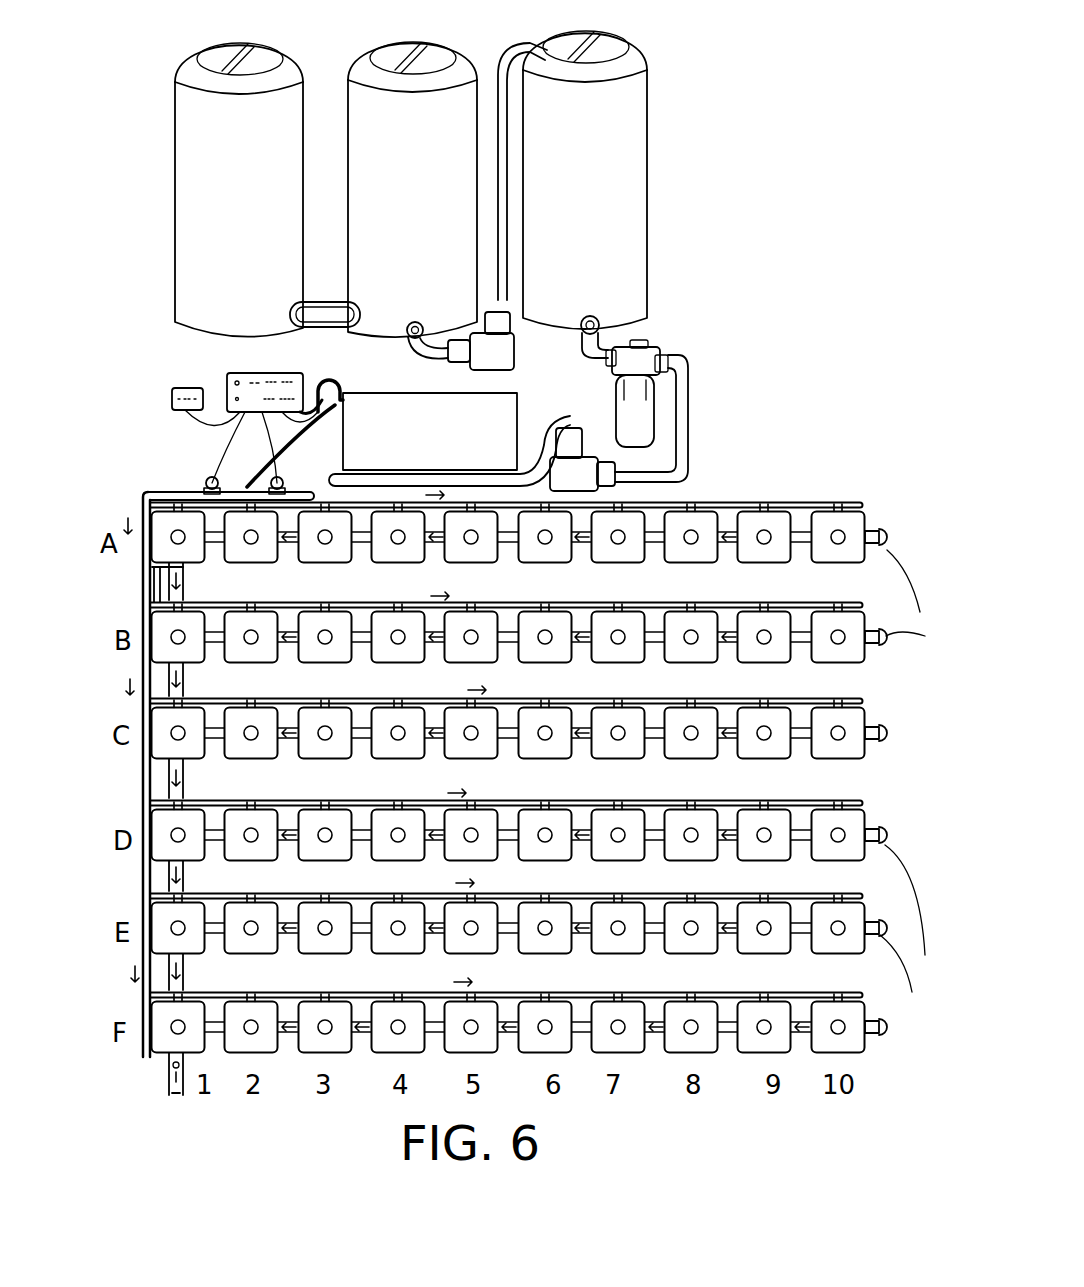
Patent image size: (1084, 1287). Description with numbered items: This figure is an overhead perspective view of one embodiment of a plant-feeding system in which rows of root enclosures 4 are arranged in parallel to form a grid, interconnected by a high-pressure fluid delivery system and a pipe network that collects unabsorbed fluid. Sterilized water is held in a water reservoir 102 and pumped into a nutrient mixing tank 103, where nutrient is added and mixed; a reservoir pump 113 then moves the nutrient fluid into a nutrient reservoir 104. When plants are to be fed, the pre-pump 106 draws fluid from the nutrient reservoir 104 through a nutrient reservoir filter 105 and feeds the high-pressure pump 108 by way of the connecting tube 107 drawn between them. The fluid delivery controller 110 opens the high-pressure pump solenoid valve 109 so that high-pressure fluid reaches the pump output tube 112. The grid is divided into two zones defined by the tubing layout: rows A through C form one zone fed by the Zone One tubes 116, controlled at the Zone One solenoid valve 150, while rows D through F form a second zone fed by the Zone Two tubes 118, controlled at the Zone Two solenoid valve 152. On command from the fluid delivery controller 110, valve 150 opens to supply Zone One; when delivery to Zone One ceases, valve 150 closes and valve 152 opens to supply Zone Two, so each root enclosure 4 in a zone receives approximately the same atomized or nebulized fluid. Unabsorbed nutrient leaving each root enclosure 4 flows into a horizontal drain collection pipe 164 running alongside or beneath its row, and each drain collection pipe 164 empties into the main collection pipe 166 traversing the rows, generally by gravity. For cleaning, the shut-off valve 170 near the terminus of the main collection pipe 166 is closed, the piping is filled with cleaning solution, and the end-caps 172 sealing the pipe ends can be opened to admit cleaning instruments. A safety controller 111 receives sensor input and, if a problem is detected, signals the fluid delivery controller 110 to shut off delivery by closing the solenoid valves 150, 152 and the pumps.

The root enclosure 4 is at (745, 510).
The water reservoir 102 is at (212, 178).
The nutrient mixing tank 103 is at (357, 105).
The nutrient reservoir 104 is at (625, 105).
The nutrient reservoir filter 105 is at (640, 405).
The pre-pump 106 is at (580, 473).
The tube 107 is at (540, 428).
The high-pressure pump 108 is at (412, 423).
The high-pressure pump solenoid valve 109 is at (340, 387).
The fluid delivery controller 110 is at (252, 375).
The safety controller 111 is at (172, 395).
The pump output tube 112 is at (318, 440).
The reservoir pump 113 is at (500, 356).
The Zone One tubes 116 is at (678, 497).
The Zone Two tubes 118 is at (148, 806).
The Zone One solenoid valve 150 is at (290, 487).
The Zone Two solenoid valve 152 is at (206, 487).
The drain collection pipe 164 is at (927, 784).
The main collection pipe 166 is at (152, 576).
The shut-off valve 170 is at (170, 1082).
The end-caps 172 is at (887, 532).